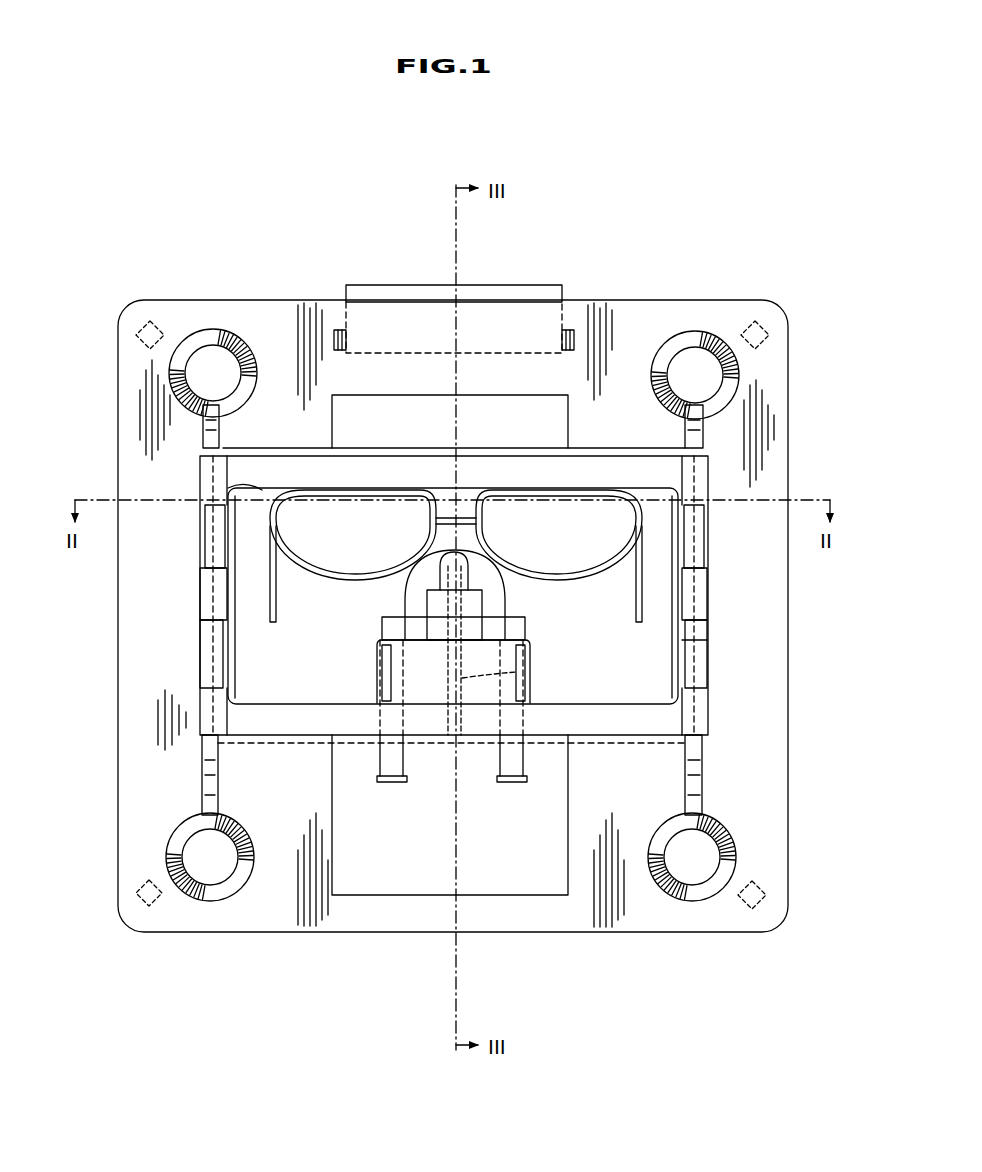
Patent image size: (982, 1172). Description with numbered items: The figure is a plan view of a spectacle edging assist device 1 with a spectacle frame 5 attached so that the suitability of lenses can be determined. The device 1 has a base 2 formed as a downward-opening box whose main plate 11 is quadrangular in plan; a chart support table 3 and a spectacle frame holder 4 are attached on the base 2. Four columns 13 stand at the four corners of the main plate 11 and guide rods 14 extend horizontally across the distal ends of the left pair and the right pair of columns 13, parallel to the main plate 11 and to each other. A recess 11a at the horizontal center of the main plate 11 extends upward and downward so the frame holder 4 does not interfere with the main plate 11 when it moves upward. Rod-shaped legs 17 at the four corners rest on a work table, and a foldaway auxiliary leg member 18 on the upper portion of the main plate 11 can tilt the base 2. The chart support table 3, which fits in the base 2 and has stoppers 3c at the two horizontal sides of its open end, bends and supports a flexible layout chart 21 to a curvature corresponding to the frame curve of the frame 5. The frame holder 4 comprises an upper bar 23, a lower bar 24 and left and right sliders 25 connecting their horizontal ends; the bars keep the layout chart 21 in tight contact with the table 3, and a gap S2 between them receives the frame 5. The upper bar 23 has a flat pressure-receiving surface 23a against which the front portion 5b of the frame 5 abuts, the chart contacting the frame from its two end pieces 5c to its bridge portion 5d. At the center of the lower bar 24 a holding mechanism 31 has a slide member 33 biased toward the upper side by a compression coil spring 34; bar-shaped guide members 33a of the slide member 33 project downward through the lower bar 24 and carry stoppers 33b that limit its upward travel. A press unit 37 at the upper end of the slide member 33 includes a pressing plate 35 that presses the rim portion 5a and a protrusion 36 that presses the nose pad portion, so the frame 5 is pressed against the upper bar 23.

The spectacle edging assist device 1 is at (140, 258).
The base 2 is at (160, 300).
The chart support table 3 is at (258, 490).
The stoppers 3c is at (205, 630).
The spectacle frame holder 4 is at (198, 475).
The spectacle frame 5 is at (358, 421).
The rim portion 5a is at (322, 568).
The front portion 5b is at (365, 486).
The end pieces 5c is at (218, 512).
The bridge portion 5d is at (462, 518).
The main plate 11 is at (150, 708).
The recess 11a is at (418, 397).
The columns 13 is at (222, 340).
The guide rods 14 is at (210, 790).
The legs 17 is at (138, 335).
The auxiliary leg member 18 is at (518, 285).
The layout chart 21 is at (680, 640).
The upper bar 23 is at (618, 470).
The pressure-receiving surface 23a is at (262, 490).
The lower bar 24 is at (630, 715).
The sliders 25 is at (212, 590).
The holding mechanism 31 is at (377, 650).
The slide member 33 is at (382, 625).
The guide members 33a is at (380, 748).
The stoppers 33b is at (392, 785).
The compression coil spring 34 is at (520, 652).
The pressing plate 35 is at (413, 590).
The protrusion 36 is at (468, 572).
The press unit 37 is at (503, 612).
The gap (space) S2 is at (652, 672).